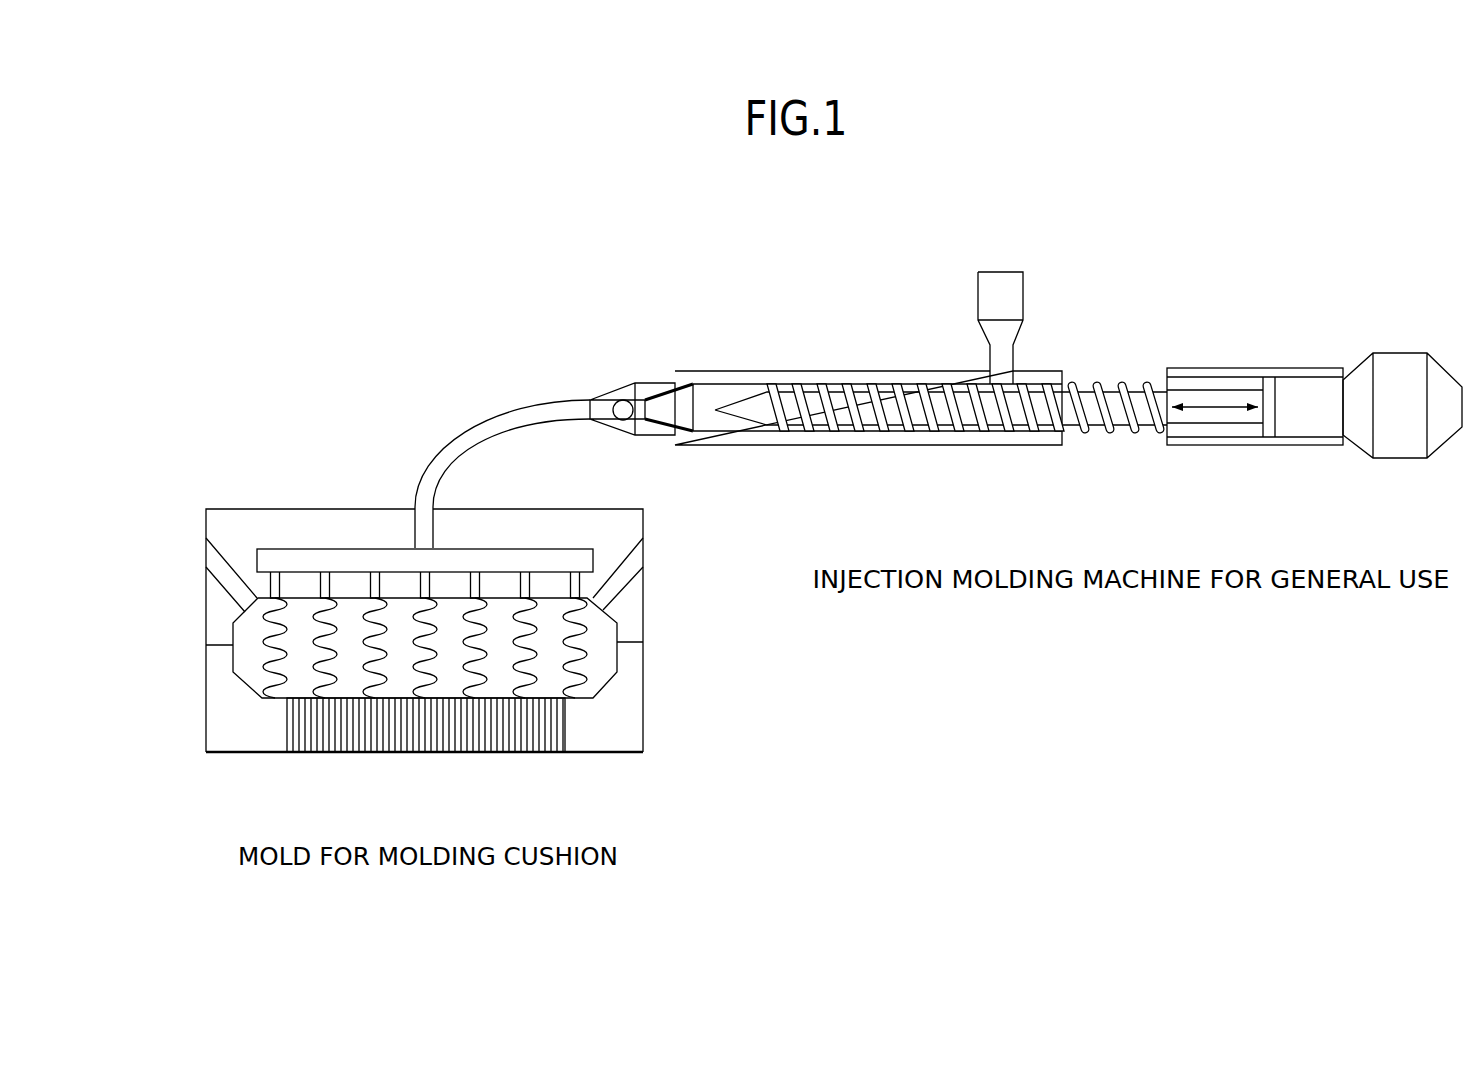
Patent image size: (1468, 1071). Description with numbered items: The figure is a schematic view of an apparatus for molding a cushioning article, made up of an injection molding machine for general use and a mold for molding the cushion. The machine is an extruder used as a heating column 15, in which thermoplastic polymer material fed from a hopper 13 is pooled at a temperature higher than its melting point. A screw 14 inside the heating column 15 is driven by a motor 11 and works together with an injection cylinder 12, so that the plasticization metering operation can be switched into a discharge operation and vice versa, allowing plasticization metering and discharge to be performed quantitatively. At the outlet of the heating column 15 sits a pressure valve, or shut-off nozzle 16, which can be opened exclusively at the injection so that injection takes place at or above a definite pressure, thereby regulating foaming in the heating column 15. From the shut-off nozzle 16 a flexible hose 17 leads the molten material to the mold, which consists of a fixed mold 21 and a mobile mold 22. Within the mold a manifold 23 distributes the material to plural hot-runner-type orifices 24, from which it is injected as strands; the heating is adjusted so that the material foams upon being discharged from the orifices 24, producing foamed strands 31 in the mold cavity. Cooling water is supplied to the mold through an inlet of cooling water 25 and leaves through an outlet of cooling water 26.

The motor for driving screw 11 is at (1402, 464).
The injection cylinder 12 is at (1186, 366).
The hopper 13 is at (1030, 295).
The screw 14 is at (803, 381).
The heating column 15 is at (771, 449).
The pressure valve (shut-off nozzle) 16 is at (610, 386).
The flexible hose 17 is at (461, 434).
The fixed mold 21 is at (202, 522).
The mobile mold 22 is at (649, 722).
The manifold 23 is at (350, 546).
The orifice (hot runner type) 24 is at (587, 582).
The inlet of cooling water 25 is at (408, 755).
The outlet of cooling water 26 is at (649, 551).
The foamed strand 31 is at (263, 655).